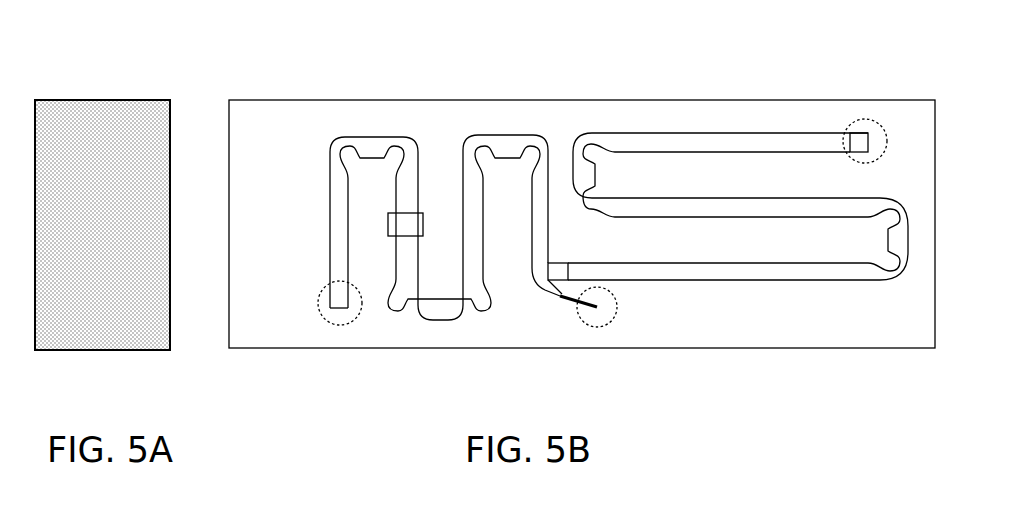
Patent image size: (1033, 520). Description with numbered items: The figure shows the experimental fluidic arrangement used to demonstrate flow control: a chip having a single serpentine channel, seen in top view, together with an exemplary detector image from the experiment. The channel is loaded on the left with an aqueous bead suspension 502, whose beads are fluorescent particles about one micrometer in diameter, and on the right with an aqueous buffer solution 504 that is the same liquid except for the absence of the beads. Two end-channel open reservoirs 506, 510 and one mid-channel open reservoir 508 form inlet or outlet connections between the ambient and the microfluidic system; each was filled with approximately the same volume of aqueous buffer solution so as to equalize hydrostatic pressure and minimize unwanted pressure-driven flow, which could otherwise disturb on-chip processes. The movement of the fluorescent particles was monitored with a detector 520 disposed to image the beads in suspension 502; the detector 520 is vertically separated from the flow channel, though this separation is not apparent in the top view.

The aqueous bead suspension 502 is at (382, 143).
The aqueous buffer solution 504 is at (803, 142).
The end-channel open reservoir 506 is at (348, 327).
The mid-channel open reservoir 508 is at (610, 320).
The end-channel open reservoir 510 is at (878, 133).
The detector 520 is at (393, 236).